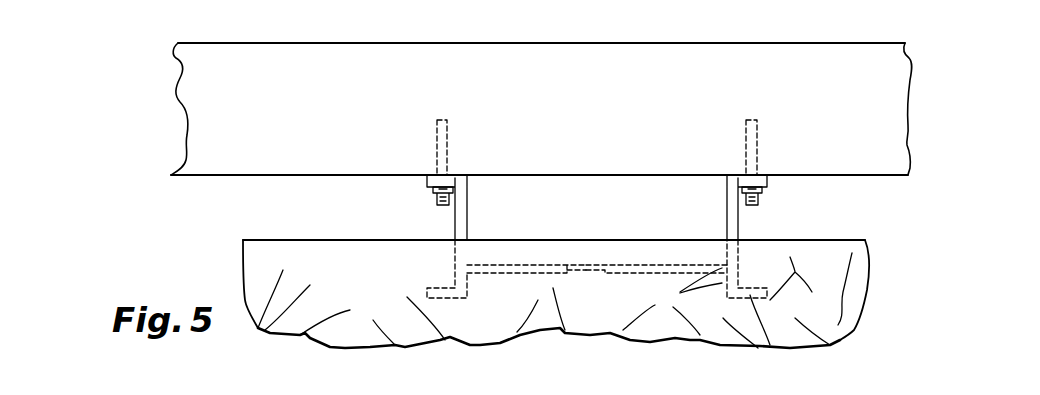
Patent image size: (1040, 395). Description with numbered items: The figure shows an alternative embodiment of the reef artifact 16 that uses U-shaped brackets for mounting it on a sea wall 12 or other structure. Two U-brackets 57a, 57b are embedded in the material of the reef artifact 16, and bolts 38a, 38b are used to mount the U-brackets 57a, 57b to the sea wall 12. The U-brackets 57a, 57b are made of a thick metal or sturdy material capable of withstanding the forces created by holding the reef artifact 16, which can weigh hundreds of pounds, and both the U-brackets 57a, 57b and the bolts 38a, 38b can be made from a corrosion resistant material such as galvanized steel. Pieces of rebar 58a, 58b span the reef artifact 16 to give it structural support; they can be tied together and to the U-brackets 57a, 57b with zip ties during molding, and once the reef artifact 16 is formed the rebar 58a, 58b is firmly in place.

The sea wall 12 is at (888, 72).
The reef artifact 16 is at (885, 300).
The bolt 38a is at (440, 137).
The bolt 38b is at (757, 145).
The U-bracket 57a is at (449, 298).
The U-bracket 57b is at (750, 300).
The piece of rebar 58a is at (535, 273).
The piece of rebar 58b is at (655, 273).